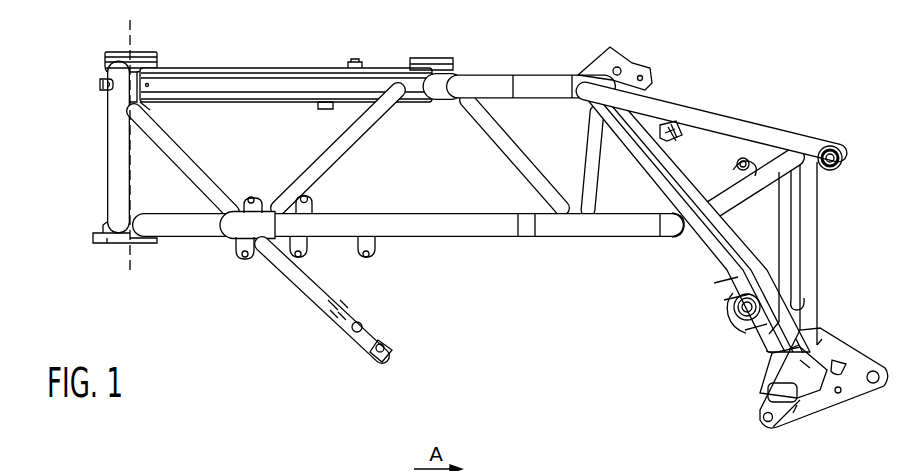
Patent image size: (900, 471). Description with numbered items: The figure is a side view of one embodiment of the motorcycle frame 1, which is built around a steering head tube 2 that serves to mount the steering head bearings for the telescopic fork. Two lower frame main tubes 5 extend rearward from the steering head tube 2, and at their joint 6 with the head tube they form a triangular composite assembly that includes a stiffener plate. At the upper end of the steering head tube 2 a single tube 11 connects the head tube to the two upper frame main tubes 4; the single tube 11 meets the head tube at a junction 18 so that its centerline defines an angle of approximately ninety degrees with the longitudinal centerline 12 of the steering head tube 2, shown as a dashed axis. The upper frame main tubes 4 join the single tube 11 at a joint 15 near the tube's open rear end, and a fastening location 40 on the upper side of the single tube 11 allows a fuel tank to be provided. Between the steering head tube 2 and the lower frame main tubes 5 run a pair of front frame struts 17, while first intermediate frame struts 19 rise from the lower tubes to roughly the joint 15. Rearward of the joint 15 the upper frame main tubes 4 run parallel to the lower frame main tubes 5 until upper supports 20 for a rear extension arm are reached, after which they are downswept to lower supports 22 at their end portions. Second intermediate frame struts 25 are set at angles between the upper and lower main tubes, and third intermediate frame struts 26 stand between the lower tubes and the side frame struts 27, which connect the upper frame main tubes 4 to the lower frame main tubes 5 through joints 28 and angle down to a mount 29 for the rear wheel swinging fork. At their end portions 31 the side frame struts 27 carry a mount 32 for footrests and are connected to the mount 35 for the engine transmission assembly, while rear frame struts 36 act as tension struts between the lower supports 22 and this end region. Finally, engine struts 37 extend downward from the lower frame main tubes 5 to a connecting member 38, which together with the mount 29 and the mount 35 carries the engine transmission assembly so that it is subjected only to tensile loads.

The motorcycle frame 1 is at (104, 296).
The steering head tube 2 is at (112, 130).
The upper frame main tubes 4 is at (541, 78).
The lower frame main tubes 5 is at (466, 238).
The joint 6 is at (132, 227).
The single tube 11 is at (265, 68).
The longitudinal centerline 12 is at (131, 266).
The joint 15 is at (456, 72).
The front frame struts 17 is at (178, 151).
The junction 18 is at (118, 100).
The first intermediate frame struts 19 is at (348, 148).
The upper supports 20 is at (592, 58).
The lower supports 22 is at (838, 147).
The second intermediate frame struts 25 is at (515, 150).
The third intermediate frame struts 26 is at (593, 192).
The side frame struts 27 is at (712, 280).
The joints 28 is at (663, 241).
The mount 29 is at (737, 318).
The end portions 31 is at (799, 396).
The mount 32 is at (745, 393).
The mount 35 is at (854, 392).
The rear frame struts 36 is at (802, 265).
The engine struts 37 is at (311, 290).
The connecting member 38 is at (389, 343).
The fastening location 40 is at (355, 62).